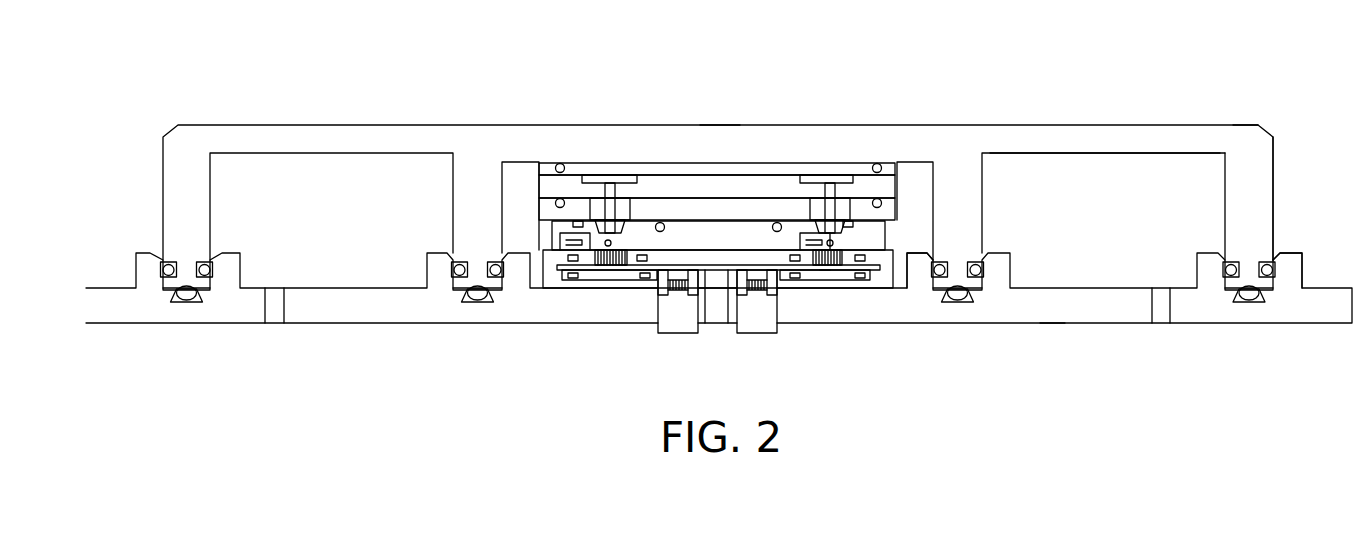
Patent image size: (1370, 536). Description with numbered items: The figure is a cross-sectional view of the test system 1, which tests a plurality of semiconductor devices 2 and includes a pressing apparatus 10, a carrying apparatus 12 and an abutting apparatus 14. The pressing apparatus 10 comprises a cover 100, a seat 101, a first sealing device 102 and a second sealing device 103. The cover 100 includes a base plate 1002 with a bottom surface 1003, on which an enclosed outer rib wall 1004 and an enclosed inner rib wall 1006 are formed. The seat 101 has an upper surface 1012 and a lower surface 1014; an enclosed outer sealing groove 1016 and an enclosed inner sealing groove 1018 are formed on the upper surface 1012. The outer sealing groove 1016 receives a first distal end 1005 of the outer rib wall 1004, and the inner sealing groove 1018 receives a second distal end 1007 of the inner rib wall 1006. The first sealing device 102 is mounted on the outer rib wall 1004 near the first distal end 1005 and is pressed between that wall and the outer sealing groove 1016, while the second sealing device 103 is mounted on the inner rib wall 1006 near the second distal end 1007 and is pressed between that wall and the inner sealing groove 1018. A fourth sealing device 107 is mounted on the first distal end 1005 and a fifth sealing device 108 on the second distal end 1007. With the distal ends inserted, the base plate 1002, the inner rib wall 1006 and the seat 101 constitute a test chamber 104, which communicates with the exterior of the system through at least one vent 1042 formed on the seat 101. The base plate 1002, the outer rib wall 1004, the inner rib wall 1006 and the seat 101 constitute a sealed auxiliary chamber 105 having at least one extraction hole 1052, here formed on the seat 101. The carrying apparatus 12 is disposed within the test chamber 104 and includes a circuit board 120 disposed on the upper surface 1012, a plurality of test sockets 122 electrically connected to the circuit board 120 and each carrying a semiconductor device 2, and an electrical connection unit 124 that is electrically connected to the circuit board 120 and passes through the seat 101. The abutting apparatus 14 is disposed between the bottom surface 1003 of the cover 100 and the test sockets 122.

The test system 1 is at (717, 105).
The pressing apparatus 10 is at (1333, 73).
The cover 100 is at (1257, 123).
The seat 101 is at (1325, 305).
The first sealing device 102 is at (168, 273).
The second sealing device 103 is at (460, 273).
The test chamber 104 is at (518, 185).
The auxiliary chamber 105 is at (333, 185).
The extraction hole 1052 is at (278, 308).
The base plate 1002 is at (1102, 137).
The bottom surface 1003 is at (1028, 152).
The enclosed outer rib wall 1004 is at (1258, 173).
The first distal end 1005 is at (1271, 291).
The enclosed inner rib wall 1006 is at (957, 178).
The second distal end 1007 is at (933, 291).
The upper surface 1012 is at (1055, 355).
The lower surface 1014 is at (1133, 355).
The enclosed outer sealing groove 1016 is at (1238, 297).
The enclosed inner sealing groove 1018 is at (946, 303).
The fourth sealing device 107 is at (1251, 303).
The fifth sealing device 108 is at (963, 294).
The carrying apparatus 12 is at (710, 336).
The circuit board 120 is at (588, 266).
The test socket 122 is at (628, 264).
The electrical connection unit 124 is at (757, 292).
The vent 1042 is at (704, 334).
The abutting apparatus 14 is at (772, 207).
The semiconductor device 2 is at (825, 270).